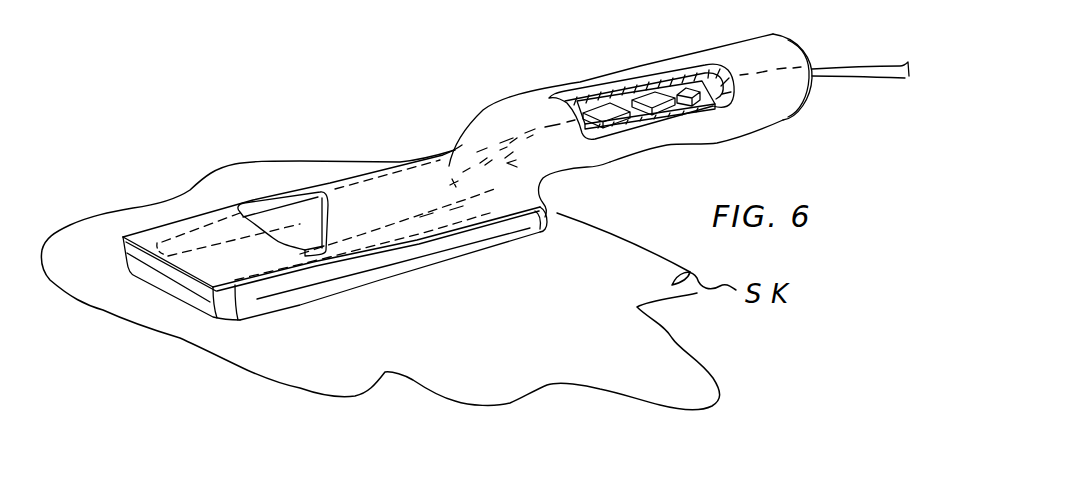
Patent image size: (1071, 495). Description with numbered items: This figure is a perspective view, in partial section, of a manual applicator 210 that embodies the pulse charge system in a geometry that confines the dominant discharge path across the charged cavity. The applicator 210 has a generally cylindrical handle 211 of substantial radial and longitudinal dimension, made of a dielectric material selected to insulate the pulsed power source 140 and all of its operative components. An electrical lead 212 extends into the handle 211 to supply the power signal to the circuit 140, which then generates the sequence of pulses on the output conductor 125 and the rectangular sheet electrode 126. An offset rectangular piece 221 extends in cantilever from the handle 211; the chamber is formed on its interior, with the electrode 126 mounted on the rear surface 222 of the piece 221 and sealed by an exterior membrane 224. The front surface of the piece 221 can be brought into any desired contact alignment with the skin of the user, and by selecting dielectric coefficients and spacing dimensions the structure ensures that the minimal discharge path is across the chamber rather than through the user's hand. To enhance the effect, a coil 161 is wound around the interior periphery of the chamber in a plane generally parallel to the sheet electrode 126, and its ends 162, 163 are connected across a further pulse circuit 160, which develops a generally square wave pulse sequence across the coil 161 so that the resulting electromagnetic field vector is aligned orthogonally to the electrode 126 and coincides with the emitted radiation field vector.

The applicator 210 is at (485, 119).
The handle 211 is at (780, 118).
The electrical lead 212 is at (828, 78).
The output conductor 125 is at (579, 122).
The pulse circuit 160 is at (610, 101).
The pulsed power source 140 is at (618, 135).
The exterior membrane 224 is at (392, 179).
The sheet electrode 126 is at (277, 217).
The offset rectangular piece 221 is at (380, 279).
The rear surface 222 is at (443, 246).
The coil end 162 is at (480, 154).
The coil end 163 is at (560, 192).
The coil 161 is at (553, 215).